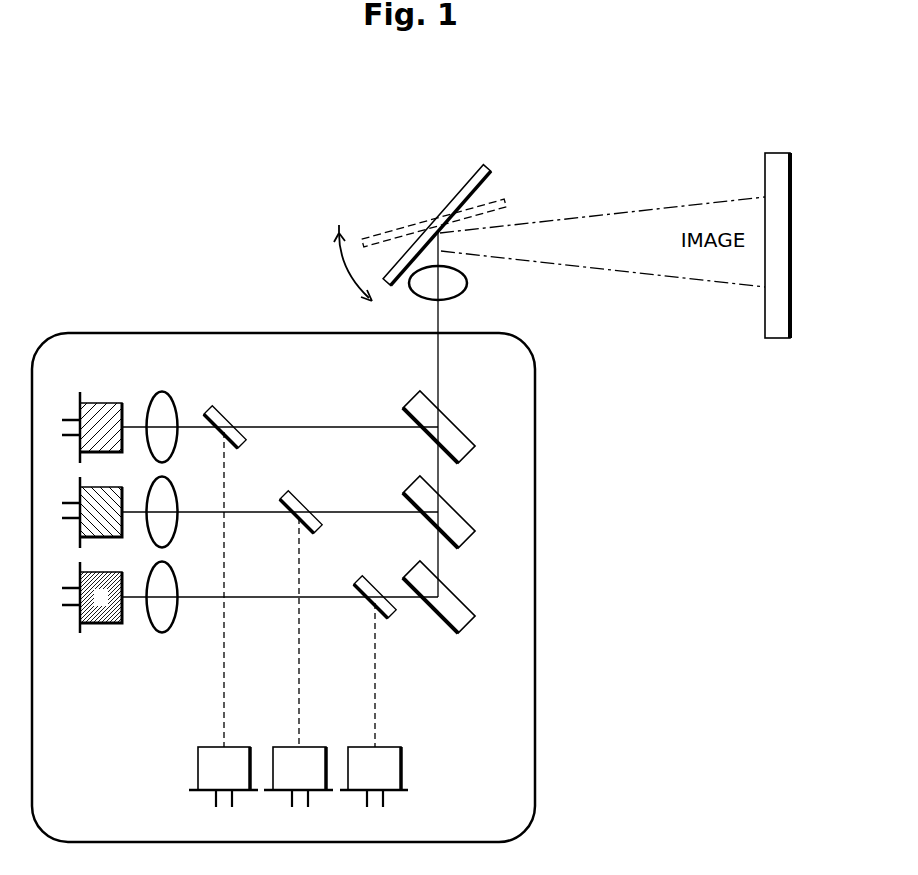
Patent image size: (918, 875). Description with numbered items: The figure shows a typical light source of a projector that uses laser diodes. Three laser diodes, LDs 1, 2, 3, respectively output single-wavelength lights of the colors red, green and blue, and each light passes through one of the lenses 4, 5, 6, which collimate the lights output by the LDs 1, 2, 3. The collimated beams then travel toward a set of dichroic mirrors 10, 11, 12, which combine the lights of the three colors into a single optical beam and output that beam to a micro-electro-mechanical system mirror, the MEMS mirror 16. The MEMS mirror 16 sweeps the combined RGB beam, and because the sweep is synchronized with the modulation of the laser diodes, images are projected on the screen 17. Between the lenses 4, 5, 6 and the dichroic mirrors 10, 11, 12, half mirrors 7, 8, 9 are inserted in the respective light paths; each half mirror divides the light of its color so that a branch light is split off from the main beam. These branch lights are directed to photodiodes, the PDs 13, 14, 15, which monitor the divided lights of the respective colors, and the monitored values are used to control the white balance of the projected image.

The laser diode 1 is at (113, 403).
The laser diode 2 is at (113, 487).
The laser diode 3 is at (113, 572).
The lens 4 is at (173, 400).
The lens 5 is at (173, 487).
The lens 6 is at (173, 571).
The half mirror 7 is at (233, 410).
The half mirror 8 is at (309, 495).
The half mirror 9 is at (383, 581).
The dichroic mirror 10 is at (466, 396).
The dichroic mirror 11 is at (466, 481).
The dichroic mirror 12 is at (466, 569).
The photodiode 13 is at (237, 747).
The photodiode 14 is at (313, 747).
The photodiode 15 is at (389, 747).
The MEMS mirror 16 is at (485, 168).
The screen 17 is at (778, 153).